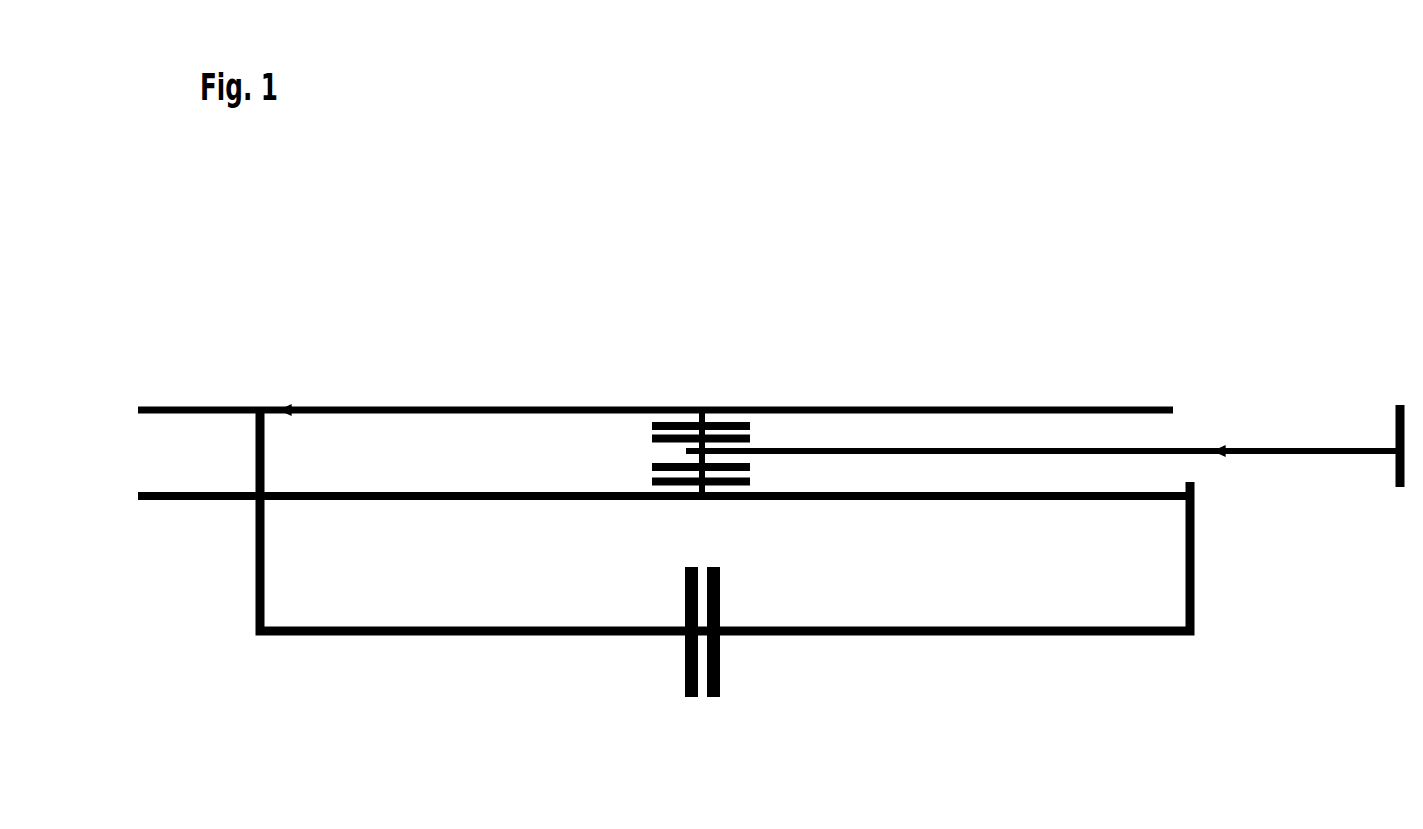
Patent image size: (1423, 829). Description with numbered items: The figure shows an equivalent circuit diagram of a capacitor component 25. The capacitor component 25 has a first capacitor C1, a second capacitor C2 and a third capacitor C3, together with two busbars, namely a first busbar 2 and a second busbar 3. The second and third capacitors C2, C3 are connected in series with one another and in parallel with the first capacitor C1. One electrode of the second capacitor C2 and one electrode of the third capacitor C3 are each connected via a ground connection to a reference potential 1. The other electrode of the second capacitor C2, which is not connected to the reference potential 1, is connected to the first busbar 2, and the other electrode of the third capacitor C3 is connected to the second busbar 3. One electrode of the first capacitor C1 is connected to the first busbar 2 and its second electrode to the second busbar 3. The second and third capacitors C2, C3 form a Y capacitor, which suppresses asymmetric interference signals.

The reference potential 1 is at (1393, 418).
The first busbar 2 is at (364, 409).
The second busbar 3 is at (194, 500).
The capacitor component 25 is at (433, 280).
The first capacitor C1 is at (706, 669).
The second capacitor C2 is at (702, 393).
The third capacitor C3 is at (697, 512).